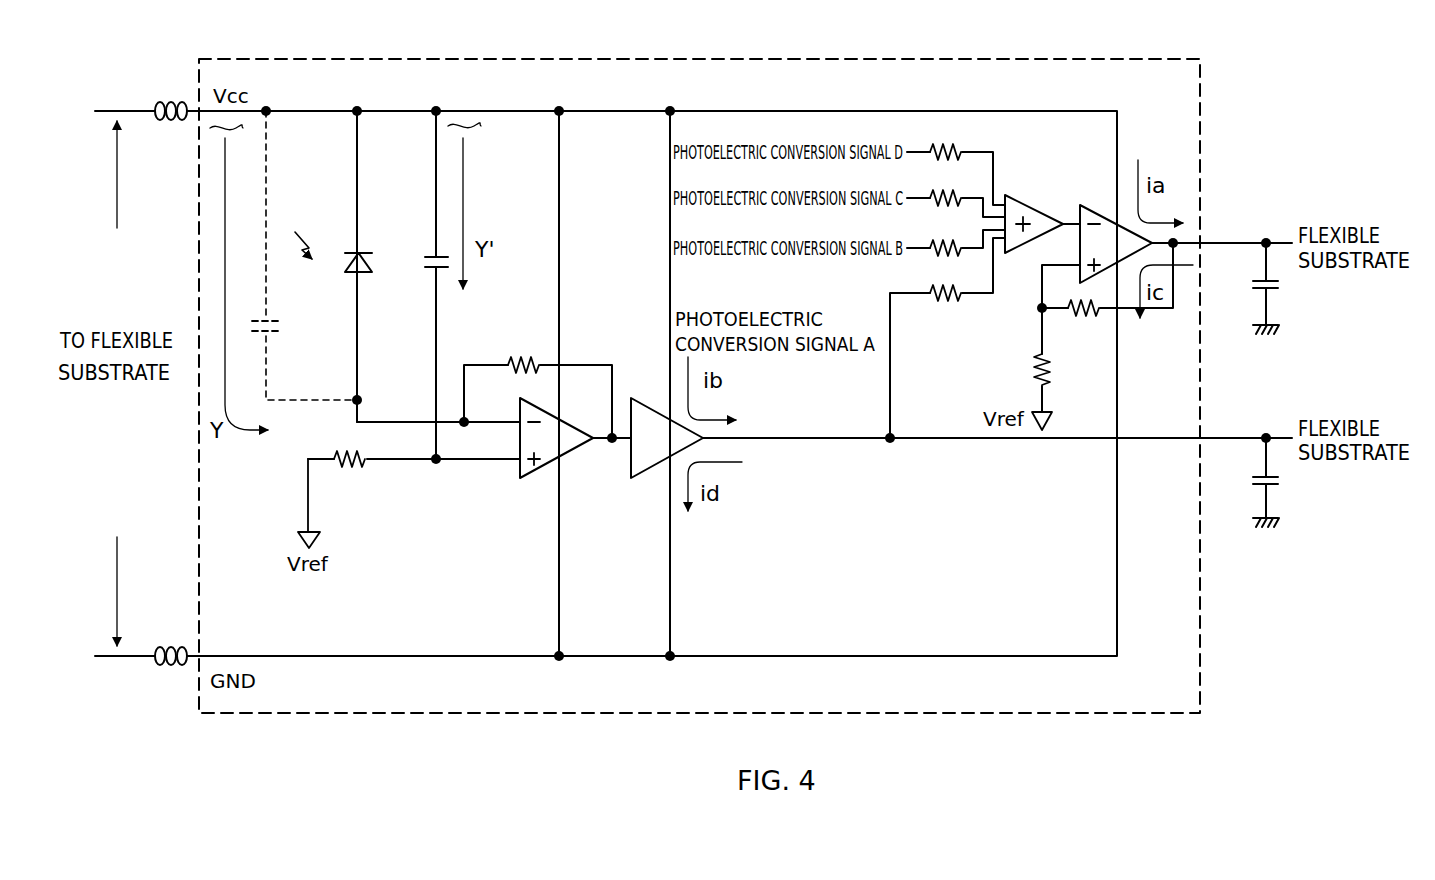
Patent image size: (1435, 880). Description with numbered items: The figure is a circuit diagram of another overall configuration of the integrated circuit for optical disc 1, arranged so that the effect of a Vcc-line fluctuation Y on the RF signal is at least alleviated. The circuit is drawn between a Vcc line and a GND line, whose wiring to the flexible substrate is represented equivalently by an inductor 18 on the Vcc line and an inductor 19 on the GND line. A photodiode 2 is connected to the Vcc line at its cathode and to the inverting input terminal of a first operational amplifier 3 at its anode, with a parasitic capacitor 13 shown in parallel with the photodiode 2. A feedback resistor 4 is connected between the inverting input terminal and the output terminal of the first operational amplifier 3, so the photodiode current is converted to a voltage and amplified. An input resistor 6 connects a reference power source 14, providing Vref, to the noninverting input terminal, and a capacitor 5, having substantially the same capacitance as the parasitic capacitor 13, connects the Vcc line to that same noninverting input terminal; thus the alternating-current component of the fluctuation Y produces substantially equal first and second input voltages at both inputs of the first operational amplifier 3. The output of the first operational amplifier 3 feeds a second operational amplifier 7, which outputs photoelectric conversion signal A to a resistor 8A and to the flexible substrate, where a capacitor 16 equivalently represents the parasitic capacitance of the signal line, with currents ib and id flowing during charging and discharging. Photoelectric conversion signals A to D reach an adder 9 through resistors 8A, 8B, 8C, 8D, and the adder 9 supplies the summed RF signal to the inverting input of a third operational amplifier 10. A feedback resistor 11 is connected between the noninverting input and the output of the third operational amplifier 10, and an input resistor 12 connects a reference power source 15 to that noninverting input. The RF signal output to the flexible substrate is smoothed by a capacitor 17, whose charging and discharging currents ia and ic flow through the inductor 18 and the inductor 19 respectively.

The integrated circuit for optical disc 1 is at (1202, 116).
The photodiode 2 is at (347, 262).
The first operational amplifier 3 is at (573, 456).
The feedback resistor 4 is at (524, 348).
The capacitor 5 is at (424, 260).
The input resistor 6 is at (352, 470).
The second operational amplifier 7 is at (643, 474).
The resistor 8A is at (950, 302).
The resistor 8B is at (954, 256).
The resistor 8C is at (958, 194).
The resistor 8D is at (944, 140).
The adder 9 is at (1028, 202).
The third operational amplifier 10 is at (1094, 207).
The feedback resistor 11 is at (1086, 318).
The input resistor 12 is at (1034, 364).
The parasitic capacitor 13 is at (279, 323).
The reference power source 14 is at (320, 540).
The reference power source 15 is at (1054, 420).
The capacitor 16 is at (1252, 481).
The capacitor 17 is at (1252, 286).
The inductor 18 is at (170, 98).
The inductor 19 is at (170, 644).